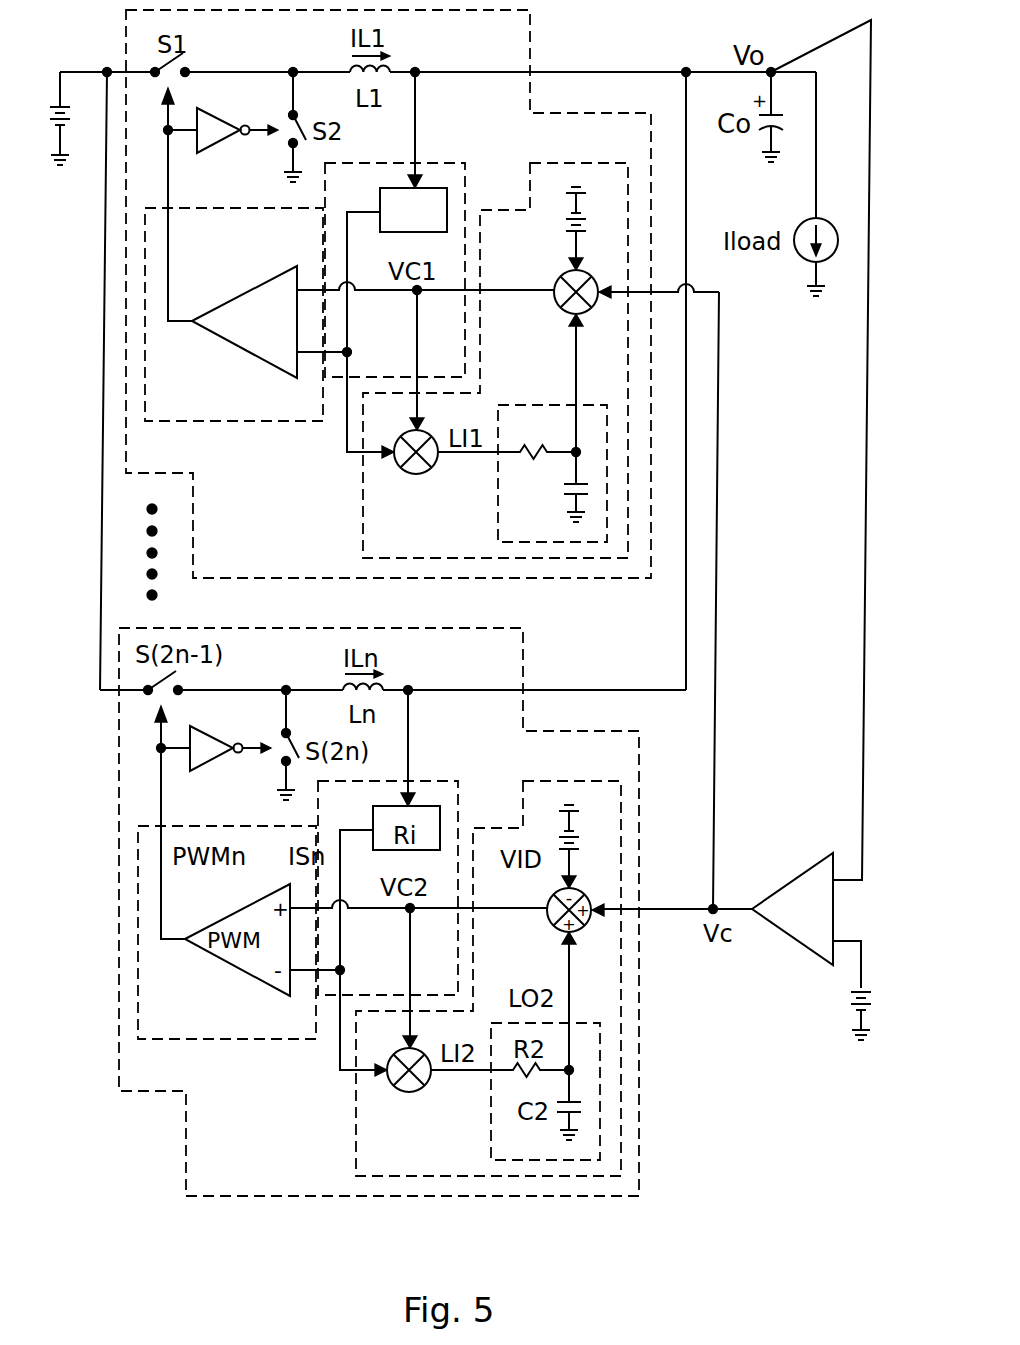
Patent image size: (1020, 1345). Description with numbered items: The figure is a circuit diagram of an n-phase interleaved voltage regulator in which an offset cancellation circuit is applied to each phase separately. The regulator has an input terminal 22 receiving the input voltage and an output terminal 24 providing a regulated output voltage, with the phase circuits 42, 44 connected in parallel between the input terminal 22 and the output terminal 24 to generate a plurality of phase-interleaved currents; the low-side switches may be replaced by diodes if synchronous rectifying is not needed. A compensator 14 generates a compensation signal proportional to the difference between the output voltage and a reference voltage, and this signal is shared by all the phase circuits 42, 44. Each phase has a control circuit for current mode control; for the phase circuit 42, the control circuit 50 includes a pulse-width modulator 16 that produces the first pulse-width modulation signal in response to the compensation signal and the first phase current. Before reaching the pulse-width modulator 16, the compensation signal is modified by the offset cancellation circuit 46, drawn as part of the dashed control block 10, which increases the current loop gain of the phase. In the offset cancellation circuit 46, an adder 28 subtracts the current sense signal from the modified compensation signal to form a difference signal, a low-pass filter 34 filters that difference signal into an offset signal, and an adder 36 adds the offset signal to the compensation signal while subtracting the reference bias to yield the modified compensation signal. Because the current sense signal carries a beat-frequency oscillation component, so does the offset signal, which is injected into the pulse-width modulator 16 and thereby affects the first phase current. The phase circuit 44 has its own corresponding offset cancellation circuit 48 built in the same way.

The input terminal 22 is at (88, 72).
The output terminal 24 is at (598, 72).
The phase circuit 42 is at (660, 197).
The control circuit 50 is at (437, 163).
The phase control circuit 10 is at (448, 205).
The pulse-width modulator 16 is at (244, 350).
The offset cancellation circuit 46 is at (363, 488).
The adder 28 is at (418, 474).
The low-pass filter 34 is at (557, 545).
The adder 36 is at (562, 308).
The compensator 14 is at (790, 880).
The phase circuit 44 is at (640, 1085).
The offset cancellation circuit 48 is at (355, 1108).